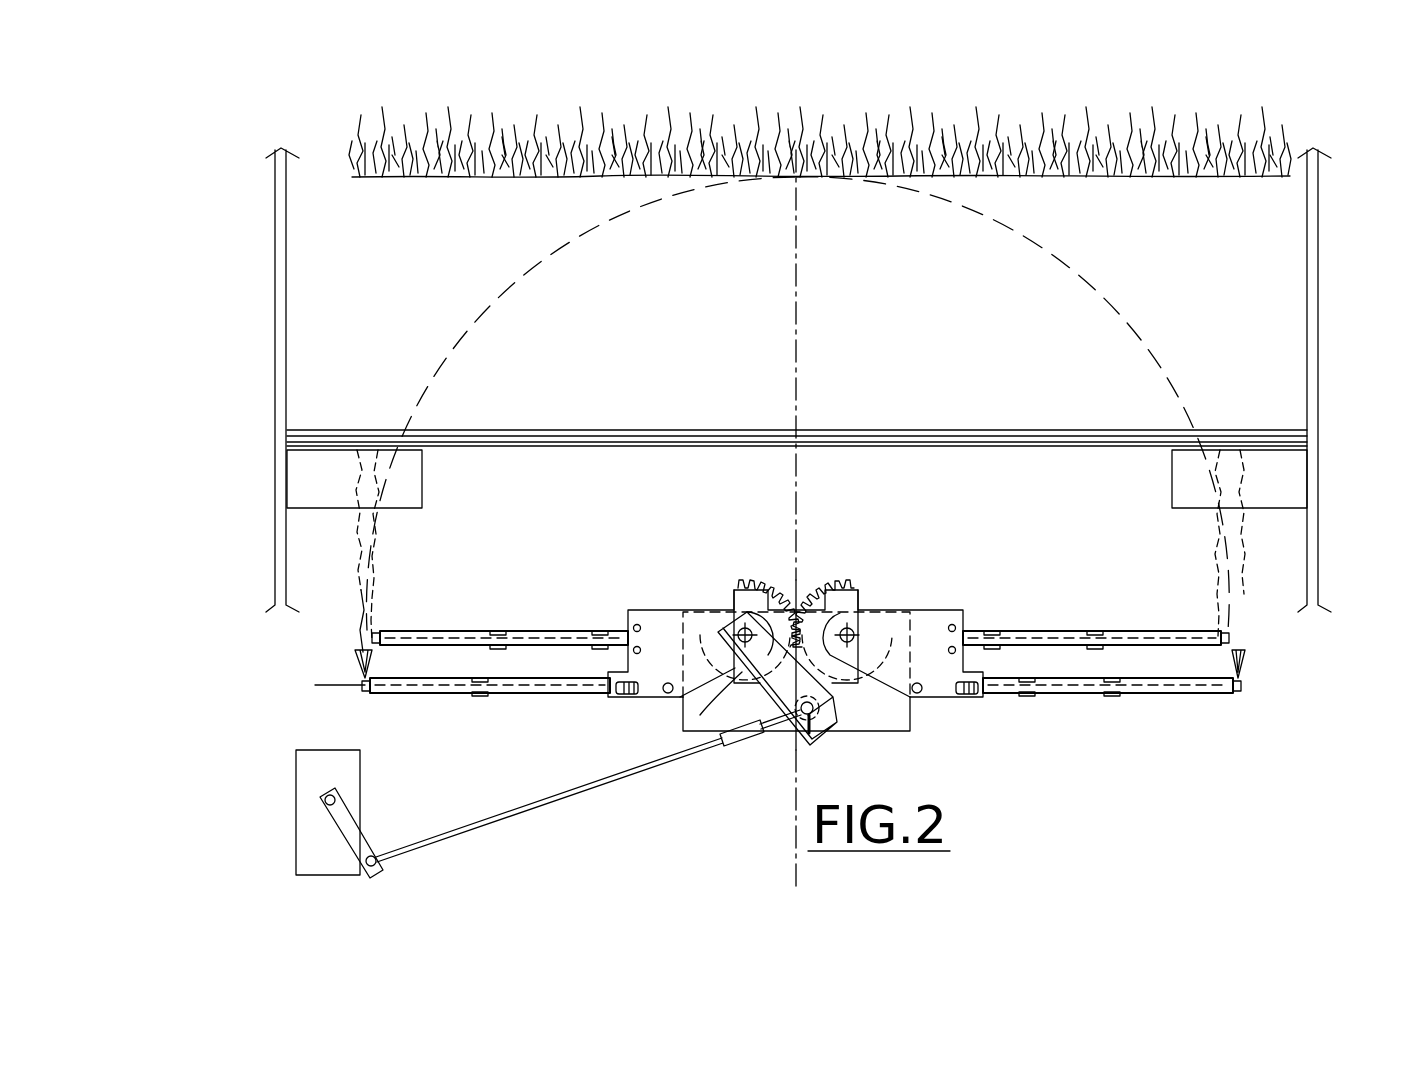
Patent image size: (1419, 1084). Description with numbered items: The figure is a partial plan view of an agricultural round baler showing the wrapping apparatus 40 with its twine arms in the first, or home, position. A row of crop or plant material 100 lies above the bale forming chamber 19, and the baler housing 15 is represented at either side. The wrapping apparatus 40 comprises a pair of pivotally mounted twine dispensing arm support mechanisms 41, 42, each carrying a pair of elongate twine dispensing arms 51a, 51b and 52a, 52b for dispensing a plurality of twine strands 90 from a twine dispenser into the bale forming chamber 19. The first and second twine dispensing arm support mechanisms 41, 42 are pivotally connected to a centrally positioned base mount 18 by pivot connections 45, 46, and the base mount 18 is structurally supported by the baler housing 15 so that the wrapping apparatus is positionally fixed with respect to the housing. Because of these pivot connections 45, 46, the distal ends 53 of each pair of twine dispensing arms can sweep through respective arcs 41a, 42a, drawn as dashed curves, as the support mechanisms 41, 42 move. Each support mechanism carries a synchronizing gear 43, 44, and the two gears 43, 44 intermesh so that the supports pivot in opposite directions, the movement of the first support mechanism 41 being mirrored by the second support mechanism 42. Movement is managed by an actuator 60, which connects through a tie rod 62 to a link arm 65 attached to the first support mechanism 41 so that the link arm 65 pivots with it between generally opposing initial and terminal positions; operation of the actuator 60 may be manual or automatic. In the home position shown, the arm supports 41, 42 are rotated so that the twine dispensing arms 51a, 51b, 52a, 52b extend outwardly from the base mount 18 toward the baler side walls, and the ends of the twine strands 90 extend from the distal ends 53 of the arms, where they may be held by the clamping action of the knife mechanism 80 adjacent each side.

The plants / crop 100 is at (1280, 118).
The bale forming chamber 19 is at (340, 240).
The baler housing 15 is at (275, 368).
The wrapping apparatus 40 is at (850, 450).
The knife mechanism 80 is at (300, 490).
The twine strands 90 is at (360, 528).
The base mount 18 is at (885, 712).
The first twine dispensing arm support mechanism 41 is at (660, 613).
The second twine dispensing arm support mechanism 42 is at (887, 625).
The synchronizing gear 43 is at (752, 580).
The synchronizing gear 44 is at (813, 588).
The pivot connection 46 is at (852, 632).
The arc 41a is at (497, 295).
The arc 42a is at (1082, 278).
The twine dispensing arm 51b is at (427, 632).
The twine dispensing arm 51a is at (525, 695).
The twine dispensing arm 52b is at (1018, 630).
The twine dispensing arm 52a is at (1060, 695).
The distal ends 53 is at (380, 637).
The pivot connection 45 is at (740, 673).
The link arm 65 is at (825, 740).
The tie rod 62 is at (648, 773).
The actuator 60 is at (308, 778).